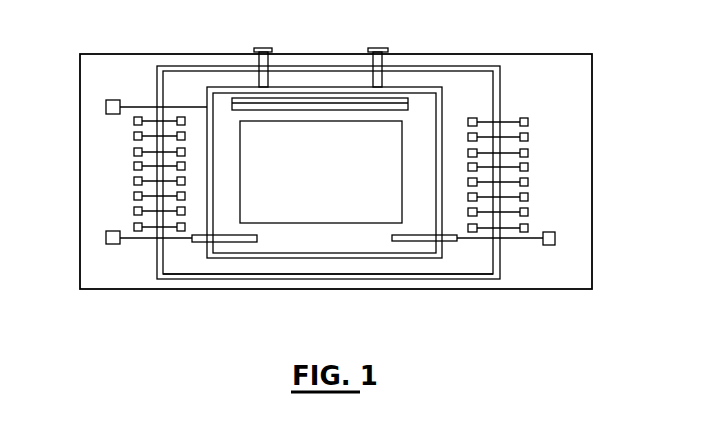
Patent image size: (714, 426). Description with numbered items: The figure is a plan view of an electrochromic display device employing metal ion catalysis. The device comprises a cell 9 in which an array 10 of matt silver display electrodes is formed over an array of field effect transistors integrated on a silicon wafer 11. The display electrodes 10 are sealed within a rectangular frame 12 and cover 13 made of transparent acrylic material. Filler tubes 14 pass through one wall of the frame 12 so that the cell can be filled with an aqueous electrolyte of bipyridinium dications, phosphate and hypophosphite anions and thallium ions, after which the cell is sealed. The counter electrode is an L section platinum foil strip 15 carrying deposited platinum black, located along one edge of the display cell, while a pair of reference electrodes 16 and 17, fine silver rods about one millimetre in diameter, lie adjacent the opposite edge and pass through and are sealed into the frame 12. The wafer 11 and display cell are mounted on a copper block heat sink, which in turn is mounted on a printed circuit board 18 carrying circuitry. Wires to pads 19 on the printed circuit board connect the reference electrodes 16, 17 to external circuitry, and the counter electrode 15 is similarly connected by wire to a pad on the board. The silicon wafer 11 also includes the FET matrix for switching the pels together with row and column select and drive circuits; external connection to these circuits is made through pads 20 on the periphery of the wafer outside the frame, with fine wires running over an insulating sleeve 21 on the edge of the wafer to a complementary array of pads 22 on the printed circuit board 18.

The cell 9 is at (379, 264).
The array of matt silver display electrodes 10 is at (331, 177).
The silicon wafer 11 is at (350, 279).
The rectangular frame 12 is at (265, 258).
The cover 13 is at (297, 240).
The filler tubes 14 is at (378, 49).
The L section platinum foil strip 15 is at (408, 108).
The reference electrode 16 is at (228, 243).
The reference electrode 17 is at (418, 243).
The printed circuit board 18 is at (592, 108).
The pads 19 is at (113, 244).
The pads 20 is at (187, 137).
The insulating sleeve 21 is at (157, 82).
The array of pads 22 is at (134, 136).